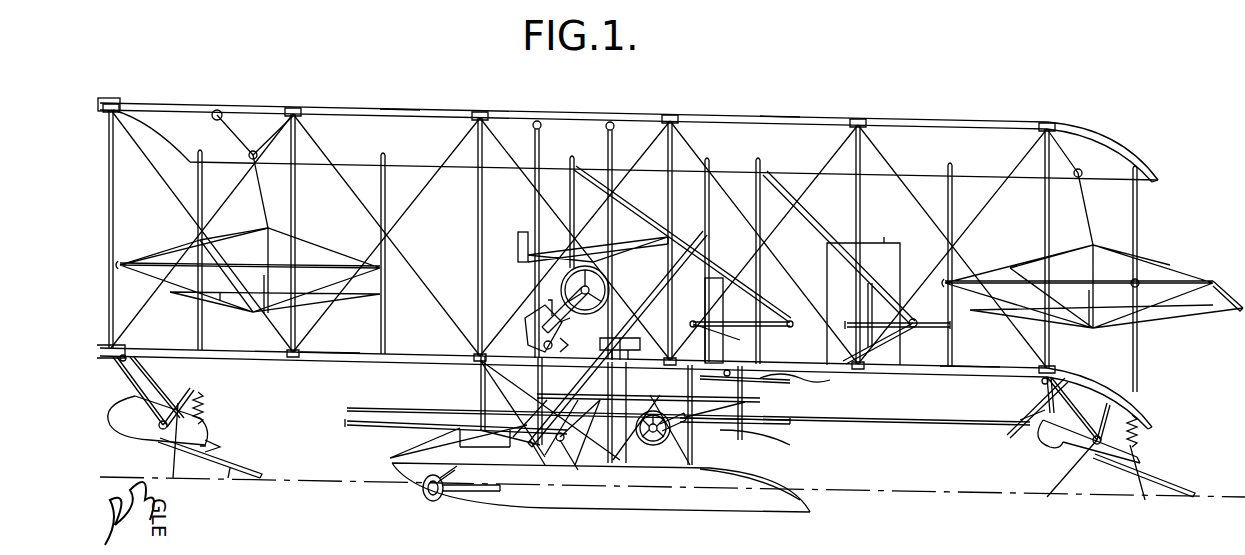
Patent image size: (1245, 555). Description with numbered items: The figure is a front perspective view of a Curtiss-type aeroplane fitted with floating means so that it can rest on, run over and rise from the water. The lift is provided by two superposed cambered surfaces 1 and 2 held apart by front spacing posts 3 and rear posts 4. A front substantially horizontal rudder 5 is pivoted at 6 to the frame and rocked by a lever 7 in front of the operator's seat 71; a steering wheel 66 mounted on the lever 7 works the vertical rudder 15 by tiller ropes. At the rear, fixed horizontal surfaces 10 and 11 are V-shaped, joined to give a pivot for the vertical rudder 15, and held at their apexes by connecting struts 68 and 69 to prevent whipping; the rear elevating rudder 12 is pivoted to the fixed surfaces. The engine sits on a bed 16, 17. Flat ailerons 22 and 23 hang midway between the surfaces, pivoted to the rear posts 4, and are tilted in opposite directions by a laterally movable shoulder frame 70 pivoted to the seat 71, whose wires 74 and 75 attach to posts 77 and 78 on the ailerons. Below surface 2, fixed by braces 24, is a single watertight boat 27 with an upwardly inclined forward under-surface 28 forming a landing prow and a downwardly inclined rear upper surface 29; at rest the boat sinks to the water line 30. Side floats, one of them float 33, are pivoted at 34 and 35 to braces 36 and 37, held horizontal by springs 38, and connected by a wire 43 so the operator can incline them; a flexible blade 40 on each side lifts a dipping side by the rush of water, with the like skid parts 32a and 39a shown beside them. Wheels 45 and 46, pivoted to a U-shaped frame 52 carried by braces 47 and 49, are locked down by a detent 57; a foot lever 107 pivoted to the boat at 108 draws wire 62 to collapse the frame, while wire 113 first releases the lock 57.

The upper aeroplane surface 1 is at (628, 233).
The lower aeroplane surface 2 is at (624, 387).
The spacing post 3 is at (114, 187).
The rear spacing post 4 is at (203, 178).
The front horizontal rudder 5 is at (372, 410).
The front rudder pivot 6 is at (436, 425).
The lever 7 is at (538, 310).
The fixed horizontal surface 10 is at (895, 336).
The fixed horizontal surface 11 is at (761, 320).
The rear elevating rudder 12 is at (940, 327).
The vertical rudder 15 is at (863, 289).
The engine bed 16 is at (547, 240).
The engine bed 17 is at (633, 240).
The aileron 22 is at (340, 265).
The aileron 23 is at (1197, 287).
The brace 24 is at (470, 373).
The watertight boat 27 is at (693, 505).
The forward under-surface 28 is at (465, 502).
The rear upper surface 29 is at (780, 488).
The water line 30 is at (893, 493).
The skid bracket 32a is at (221, 447).
The float 33 is at (1063, 447).
The float pivot 34 is at (158, 438).
The float pivot 35 is at (1062, 488).
The brace 36 is at (128, 432).
The brace 37 is at (671, 469).
The spring 38 is at (203, 395).
The front skid runner 39a is at (214, 475).
The blade 40 is at (1115, 475).
The wire 43 is at (327, 360).
The wheel 45 is at (513, 400).
The wheel 46 is at (654, 447).
The brace 47 is at (563, 438).
The brace 49 is at (762, 400).
The U-shaped frame 52 is at (745, 433).
The locking detent 57 is at (790, 445).
The wire 62 is at (733, 380).
The steering wheel 66 is at (585, 266).
The connecting strut 68 is at (871, 290).
The connecting strut 69 is at (745, 340).
The shoulder frame 70 is at (662, 238).
The seat 71 is at (627, 350).
The wire 74 is at (399, 118).
The wire 75 is at (778, 126).
The aileron post 77 is at (262, 240).
The aileron post 78 is at (1120, 268).
The foot lever 107 is at (578, 472).
The foot lever pivot 108 is at (548, 470).
The wire 113 is at (810, 386).